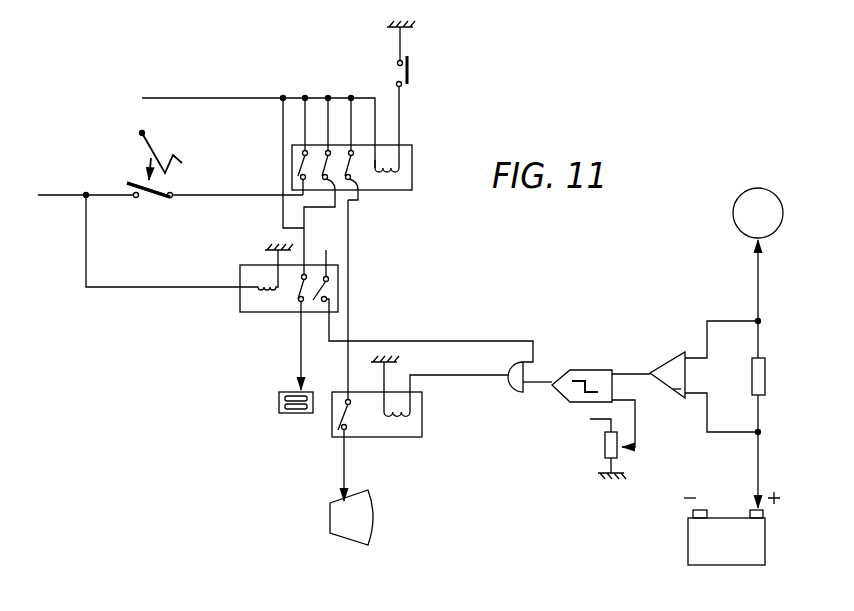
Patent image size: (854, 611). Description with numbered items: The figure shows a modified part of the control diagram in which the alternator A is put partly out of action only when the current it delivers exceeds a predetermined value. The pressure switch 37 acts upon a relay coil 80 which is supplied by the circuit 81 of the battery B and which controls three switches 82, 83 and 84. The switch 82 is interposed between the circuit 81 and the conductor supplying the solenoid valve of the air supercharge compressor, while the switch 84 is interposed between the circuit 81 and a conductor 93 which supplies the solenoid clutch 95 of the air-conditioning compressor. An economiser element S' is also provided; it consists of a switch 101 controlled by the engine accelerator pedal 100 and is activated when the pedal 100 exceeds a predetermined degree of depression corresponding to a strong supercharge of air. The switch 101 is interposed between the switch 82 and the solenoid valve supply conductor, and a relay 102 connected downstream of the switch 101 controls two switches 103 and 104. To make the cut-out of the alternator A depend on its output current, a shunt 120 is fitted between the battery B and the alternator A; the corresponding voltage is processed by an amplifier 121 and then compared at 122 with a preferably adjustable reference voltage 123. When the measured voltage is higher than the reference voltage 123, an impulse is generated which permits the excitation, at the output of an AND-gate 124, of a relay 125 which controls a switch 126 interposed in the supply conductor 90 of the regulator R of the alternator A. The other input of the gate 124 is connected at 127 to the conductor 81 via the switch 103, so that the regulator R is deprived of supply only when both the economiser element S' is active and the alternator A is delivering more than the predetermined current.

The circuit of the battery 81 is at (193, 97).
The connection point to conductor 81 127 is at (283, 97).
The switch 82 is at (296, 167).
The switch 83 is at (363, 157).
The switch 84 is at (326, 186).
The relay coil 80 is at (390, 172).
The supply conductor of the regulator 90 is at (350, 237).
The pressure switch 37 is at (410, 70).
The economiser element S' is at (121, 159).
The engine accelerator pedal 100 is at (182, 163).
The switch 101 is at (152, 198).
The relay 102 is at (258, 298).
The switch 103 is at (335, 290).
The switch 104 is at (301, 301).
The conductor 93 is at (298, 365).
The solenoid clutch 95 is at (278, 403).
The switch 126 is at (338, 426).
The relay 125 is at (392, 419).
The AND-gate 124 is at (516, 386).
The comparator 122 is at (590, 368).
The amplifier 121 is at (663, 362).
The shunt 120 is at (752, 377).
The reference voltage 123 is at (605, 445).
The alternator A is at (766, 226).
The battery B is at (734, 553).
The regulator R is at (357, 529).